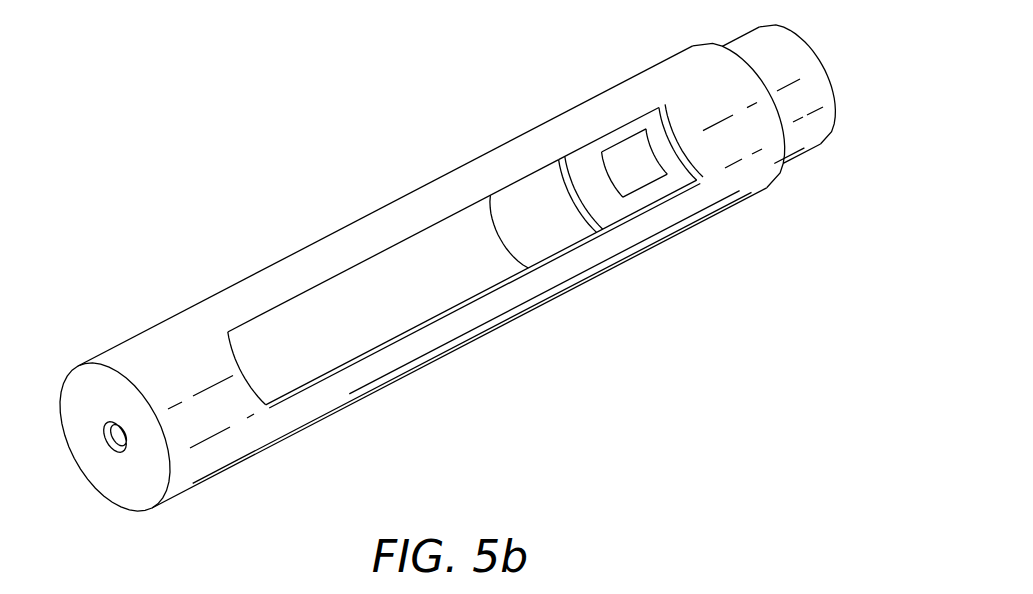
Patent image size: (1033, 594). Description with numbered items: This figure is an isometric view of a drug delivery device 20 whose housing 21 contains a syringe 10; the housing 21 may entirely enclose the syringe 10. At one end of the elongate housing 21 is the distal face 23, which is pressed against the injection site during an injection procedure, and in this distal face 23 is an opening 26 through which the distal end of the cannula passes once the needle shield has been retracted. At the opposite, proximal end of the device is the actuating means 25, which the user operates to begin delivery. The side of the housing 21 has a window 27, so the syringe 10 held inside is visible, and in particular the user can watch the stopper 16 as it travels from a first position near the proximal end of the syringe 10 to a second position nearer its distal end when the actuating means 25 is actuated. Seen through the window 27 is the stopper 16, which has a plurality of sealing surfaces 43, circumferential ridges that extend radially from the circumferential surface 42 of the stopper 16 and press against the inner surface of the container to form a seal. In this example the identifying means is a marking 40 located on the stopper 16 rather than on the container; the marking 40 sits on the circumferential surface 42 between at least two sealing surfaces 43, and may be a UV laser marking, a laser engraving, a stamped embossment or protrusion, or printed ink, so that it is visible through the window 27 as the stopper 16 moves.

The drug delivery device 20 is at (189, 214).
The housing 21 is at (300, 434).
The distal face 23 is at (78, 449).
The opening 26 is at (110, 447).
The stopper 16 is at (612, 213).
The window 27 is at (493, 287).
The syringe 10 is at (363, 340).
The sealing surfaces 43 is at (577, 167).
The circumferential surface 42 is at (593, 165).
The marking 40 is at (655, 178).
The actuating means 25 is at (824, 64).